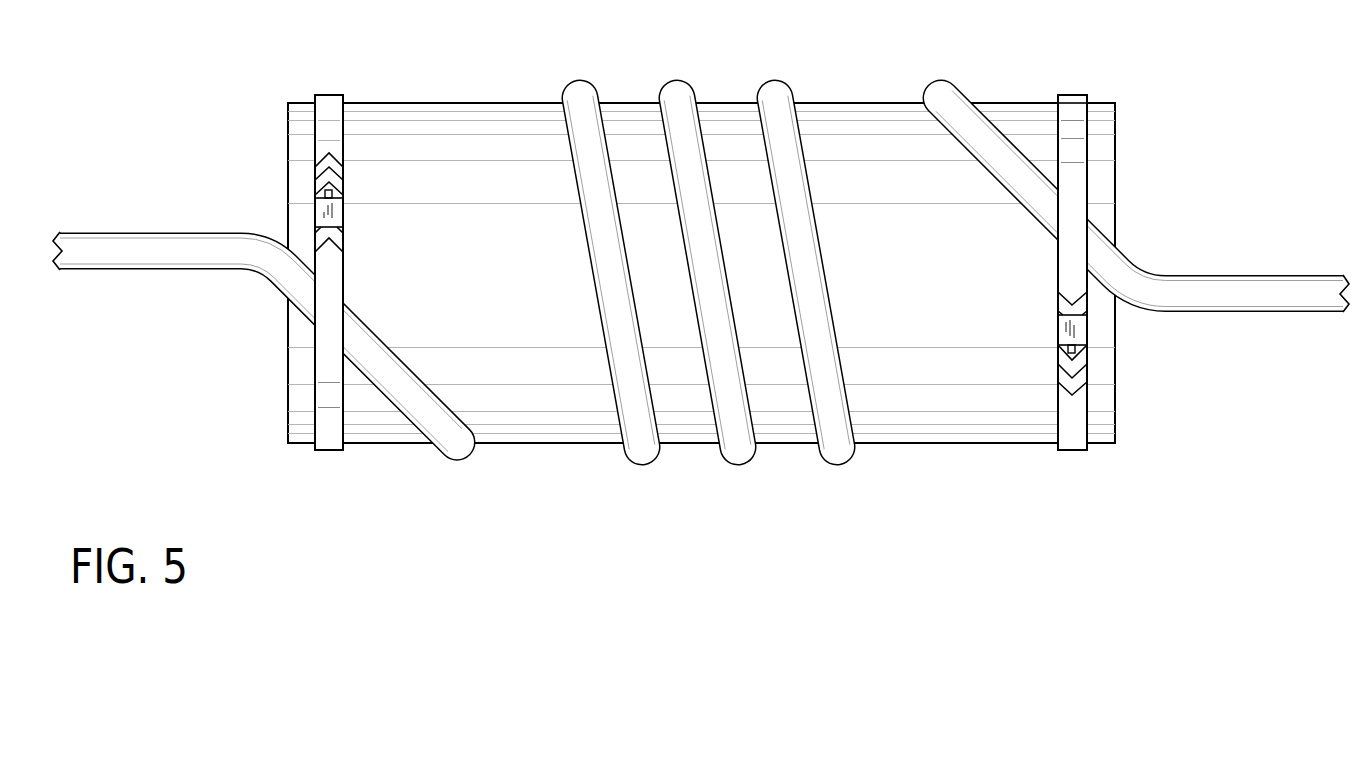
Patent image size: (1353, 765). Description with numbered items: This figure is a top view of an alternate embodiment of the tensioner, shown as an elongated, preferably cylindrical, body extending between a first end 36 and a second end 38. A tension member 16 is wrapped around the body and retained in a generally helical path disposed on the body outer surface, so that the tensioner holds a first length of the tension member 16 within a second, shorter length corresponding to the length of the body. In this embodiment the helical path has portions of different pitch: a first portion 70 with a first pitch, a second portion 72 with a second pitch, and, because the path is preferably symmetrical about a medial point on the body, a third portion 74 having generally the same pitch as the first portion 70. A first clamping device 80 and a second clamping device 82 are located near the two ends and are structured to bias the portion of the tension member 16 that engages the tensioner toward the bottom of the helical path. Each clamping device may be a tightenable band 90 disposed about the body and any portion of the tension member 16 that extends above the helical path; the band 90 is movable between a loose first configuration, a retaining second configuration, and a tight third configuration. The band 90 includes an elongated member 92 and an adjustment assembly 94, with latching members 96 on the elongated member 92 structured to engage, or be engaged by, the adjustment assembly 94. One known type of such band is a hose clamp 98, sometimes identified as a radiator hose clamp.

The tension member 16 is at (1247, 283).
The first end 36 is at (288, 405).
The second end 38 is at (1115, 372).
The first portion 70 is at (413, 425).
The second portion 72 is at (667, 138).
The third portion 74 is at (973, 152).
The first clamping device 80 is at (322, 450).
The second clamping device 82 is at (1068, 450).
The tightenable band 90 is at (315, 142).
The elongated member 92 is at (1077, 181).
The adjustment assembly 94 is at (1073, 332).
The latching members 96 is at (1080, 388).
The hose clamp 98 is at (1073, 100).